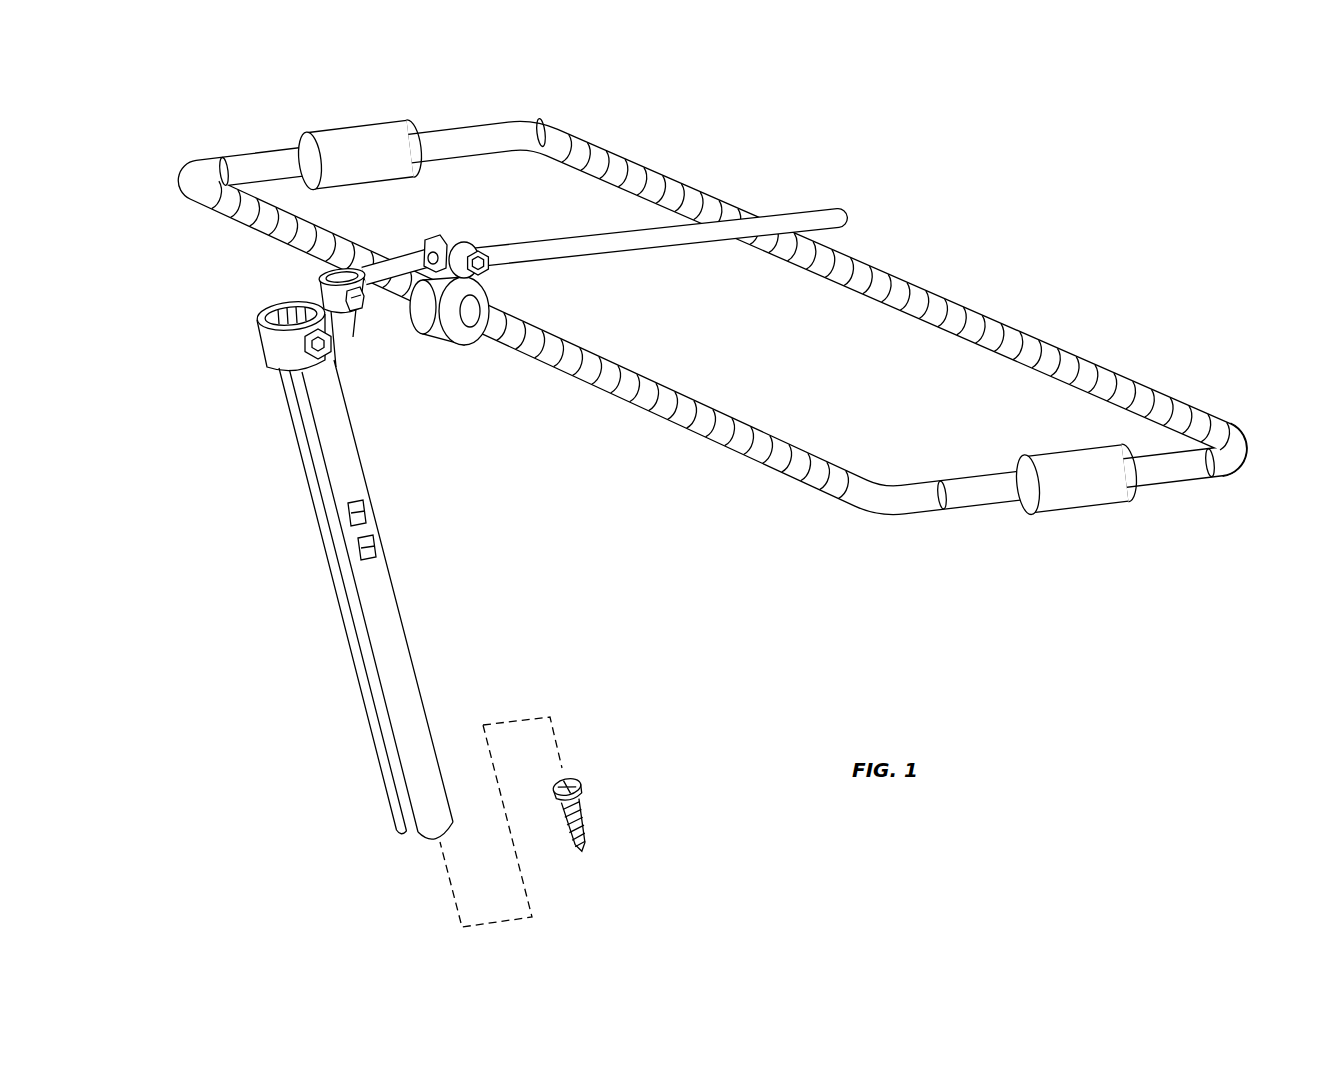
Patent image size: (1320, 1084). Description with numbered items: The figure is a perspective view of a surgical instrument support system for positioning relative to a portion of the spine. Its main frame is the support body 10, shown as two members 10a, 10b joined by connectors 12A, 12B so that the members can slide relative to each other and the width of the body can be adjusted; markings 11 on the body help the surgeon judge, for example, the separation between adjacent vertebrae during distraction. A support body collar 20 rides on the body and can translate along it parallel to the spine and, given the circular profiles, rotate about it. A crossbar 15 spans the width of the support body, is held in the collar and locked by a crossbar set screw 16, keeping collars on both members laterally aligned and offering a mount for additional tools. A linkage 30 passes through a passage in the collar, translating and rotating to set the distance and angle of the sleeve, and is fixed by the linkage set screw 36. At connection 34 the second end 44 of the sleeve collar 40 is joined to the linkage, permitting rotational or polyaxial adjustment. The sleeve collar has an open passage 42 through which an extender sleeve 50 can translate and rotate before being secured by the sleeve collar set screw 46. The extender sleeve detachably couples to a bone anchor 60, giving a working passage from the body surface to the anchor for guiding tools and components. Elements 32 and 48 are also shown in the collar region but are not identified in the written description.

The support body 10 is at (731, 326).
The member 10a is at (893, 508).
The member 10b is at (1234, 466).
The markings 11 is at (960, 302).
The connector 12A is at (1083, 500).
The connector 12B is at (352, 124).
The crossbar 15 is at (637, 238).
The crossbar set screw 16 is at (490, 275).
The support body collar 20 is at (475, 340).
The linkage 30 is at (406, 265).
The clamp 32 is at (499, 253).
The connection 34 is at (320, 279).
The linkage set screw 36 is at (430, 240).
The sleeve collar 40 is at (270, 347).
The open passage 42 is at (246, 323).
The second end of sleeve collar 44 is at (385, 332).
The sleeve collar set screw 46 is at (337, 372).
The tab 48 is at (370, 318).
The extender sleeve 50 is at (366, 599).
The bone anchor 60 is at (585, 781).